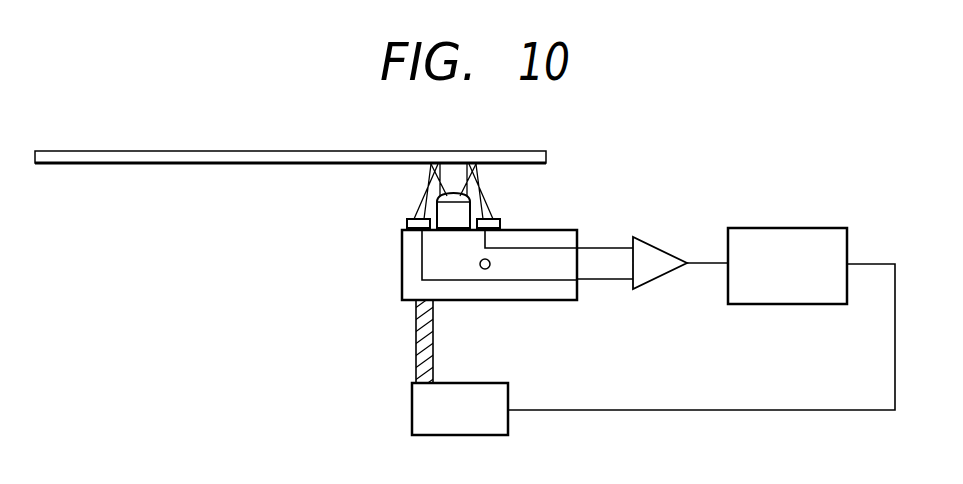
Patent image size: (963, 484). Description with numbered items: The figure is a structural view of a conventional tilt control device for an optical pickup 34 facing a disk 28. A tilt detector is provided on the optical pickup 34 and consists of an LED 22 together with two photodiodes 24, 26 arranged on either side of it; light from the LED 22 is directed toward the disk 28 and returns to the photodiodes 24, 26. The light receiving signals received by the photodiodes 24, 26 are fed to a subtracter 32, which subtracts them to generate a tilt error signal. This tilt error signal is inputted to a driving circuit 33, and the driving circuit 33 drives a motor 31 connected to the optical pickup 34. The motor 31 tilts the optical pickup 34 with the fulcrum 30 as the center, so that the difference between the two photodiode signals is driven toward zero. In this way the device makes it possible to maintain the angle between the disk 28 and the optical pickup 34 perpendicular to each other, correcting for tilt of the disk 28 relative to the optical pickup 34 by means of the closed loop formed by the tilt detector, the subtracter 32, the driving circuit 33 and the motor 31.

The LED 22 is at (445, 215).
The photodiode 24 is at (406, 222).
The photodiode 26 is at (497, 219).
The disk 28 is at (508, 154).
The fulcrum 30 is at (484, 270).
The motor 31 is at (490, 383).
The subtracter 32 is at (661, 293).
The driving circuit 33 is at (821, 228).
The optical pickup 34 is at (577, 230).